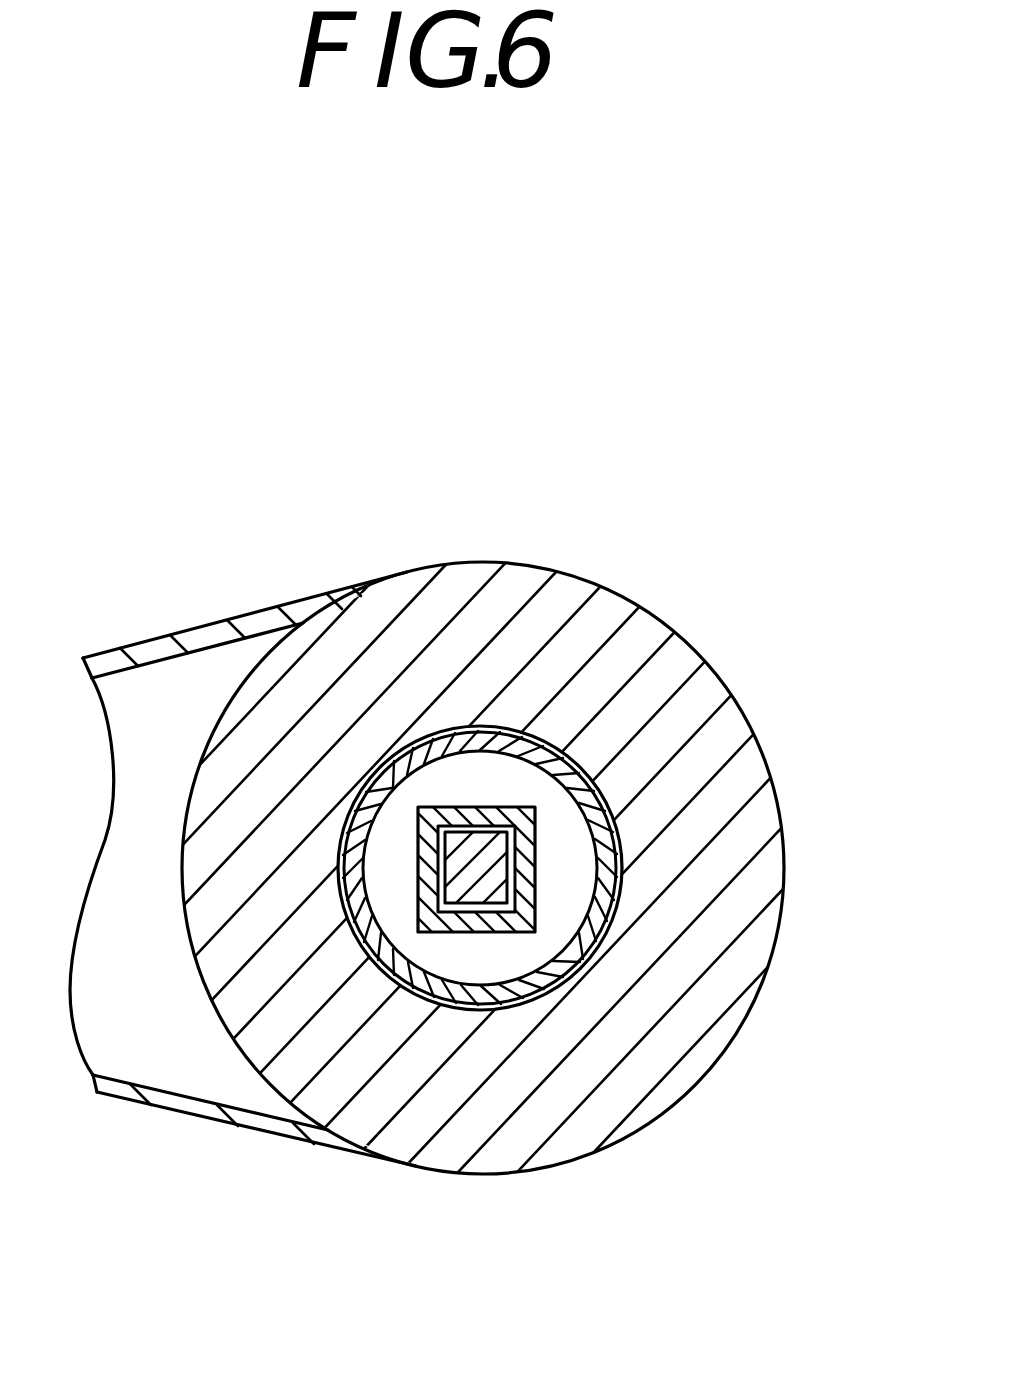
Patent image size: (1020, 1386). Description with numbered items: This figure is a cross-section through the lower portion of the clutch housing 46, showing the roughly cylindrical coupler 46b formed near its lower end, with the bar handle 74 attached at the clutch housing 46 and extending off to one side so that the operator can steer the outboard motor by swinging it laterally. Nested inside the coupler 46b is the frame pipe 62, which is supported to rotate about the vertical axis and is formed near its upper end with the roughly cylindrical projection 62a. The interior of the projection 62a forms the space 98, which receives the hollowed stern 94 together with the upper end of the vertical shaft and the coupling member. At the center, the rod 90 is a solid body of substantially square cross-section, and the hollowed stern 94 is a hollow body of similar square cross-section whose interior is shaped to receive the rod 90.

The clutch housing 46 is at (568, 577).
The coupler 46b is at (635, 645).
The bar handle 74 is at (167, 652).
The frame pipe 62 is at (403, 992).
The projection 62a is at (360, 775).
The space 98 is at (555, 848).
The hollowed stern 94 is at (452, 927).
The rod 90 is at (463, 833).